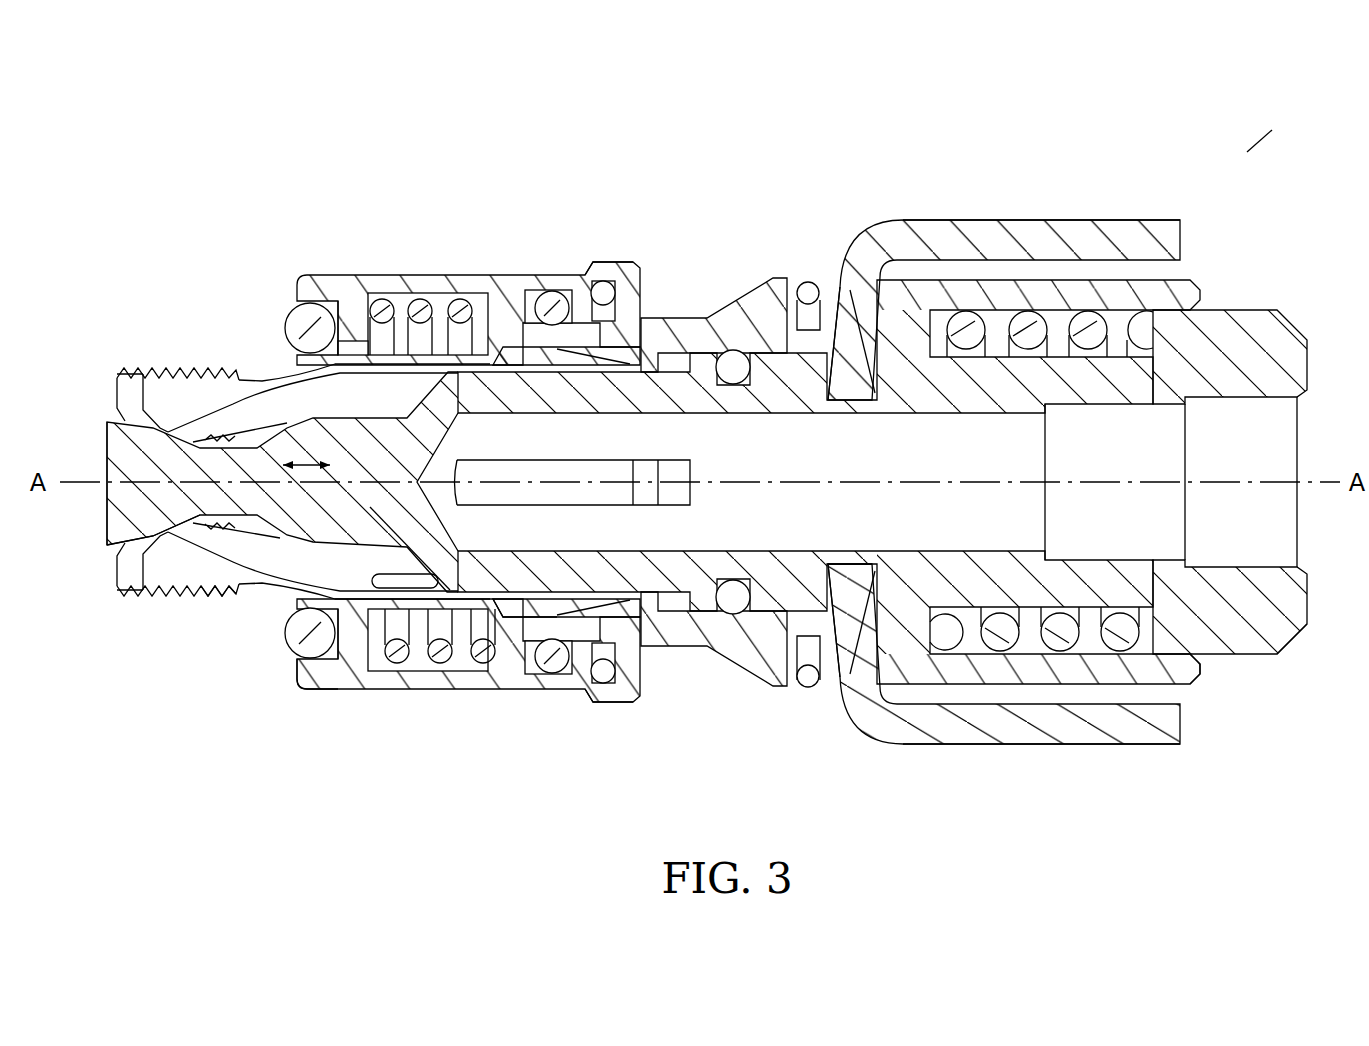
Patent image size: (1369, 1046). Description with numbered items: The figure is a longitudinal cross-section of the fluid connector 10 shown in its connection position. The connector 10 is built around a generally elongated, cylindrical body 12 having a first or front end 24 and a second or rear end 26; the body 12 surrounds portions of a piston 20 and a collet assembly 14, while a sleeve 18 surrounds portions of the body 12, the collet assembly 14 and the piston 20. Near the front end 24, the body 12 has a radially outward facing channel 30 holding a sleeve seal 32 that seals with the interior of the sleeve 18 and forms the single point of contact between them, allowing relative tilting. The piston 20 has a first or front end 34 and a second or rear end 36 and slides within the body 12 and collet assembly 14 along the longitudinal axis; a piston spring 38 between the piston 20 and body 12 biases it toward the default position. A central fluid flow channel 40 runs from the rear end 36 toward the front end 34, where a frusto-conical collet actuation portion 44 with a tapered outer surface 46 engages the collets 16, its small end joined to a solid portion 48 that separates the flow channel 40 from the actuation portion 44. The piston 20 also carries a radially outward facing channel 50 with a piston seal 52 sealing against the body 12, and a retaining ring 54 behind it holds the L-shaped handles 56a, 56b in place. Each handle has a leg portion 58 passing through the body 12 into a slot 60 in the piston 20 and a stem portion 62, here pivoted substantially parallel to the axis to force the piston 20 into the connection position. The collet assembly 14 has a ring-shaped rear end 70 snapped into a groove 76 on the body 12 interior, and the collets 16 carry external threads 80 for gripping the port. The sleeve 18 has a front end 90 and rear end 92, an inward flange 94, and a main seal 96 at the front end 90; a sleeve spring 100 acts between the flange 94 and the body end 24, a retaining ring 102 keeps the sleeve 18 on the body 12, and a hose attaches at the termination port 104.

The fluid connector 10 is at (1242, 155).
The body 12 is at (1188, 274).
The collet assembly 14 is at (268, 380).
The collets 16 is at (178, 396).
The sleeve 18 is at (360, 273).
The piston 20 is at (1262, 308).
The first or front end of the body 24 is at (490, 297).
The second or rear end of the body 26 is at (1190, 690).
The radially outward facing channel 30 is at (530, 296).
The sleeve seal 32 is at (580, 274).
The first or front end of the piston 34 is at (172, 512).
The second or rear end of the piston 36 is at (1262, 642).
The piston spring 38 is at (1090, 325).
The central fluid flow channel 40 is at (1222, 550).
The collet actuation portion 44 is at (120, 515).
The tapered outer surface 46 is at (145, 420).
The solid portion 48 is at (347, 468).
The radially outward facing channel 50 is at (703, 318).
The piston seal 52 is at (733, 363).
The retaining ring 54 is at (805, 286).
The handle 56a is at (991, 220).
The handle 56b is at (962, 747).
The leg portion 58 is at (843, 266).
The slot 60 is at (831, 567).
The stem portion 62 is at (1068, 232).
The ring-shaped first or rear end 70 is at (613, 614).
The groove 76 is at (520, 608).
The external threads 80 is at (225, 598).
The first or front end of the sleeve 90 is at (308, 688).
The second or rear end of the sleeve 92 is at (570, 702).
The radially inwardly extending flange 94 is at (360, 646).
The main seal 96 is at (290, 325).
The sleeve spring 100 is at (415, 312).
The retaining ring 102 is at (609, 288).
The termination port 104 is at (1243, 530).